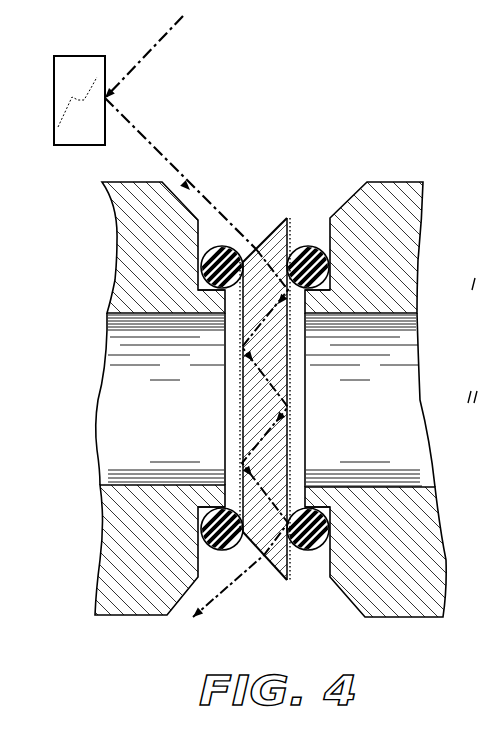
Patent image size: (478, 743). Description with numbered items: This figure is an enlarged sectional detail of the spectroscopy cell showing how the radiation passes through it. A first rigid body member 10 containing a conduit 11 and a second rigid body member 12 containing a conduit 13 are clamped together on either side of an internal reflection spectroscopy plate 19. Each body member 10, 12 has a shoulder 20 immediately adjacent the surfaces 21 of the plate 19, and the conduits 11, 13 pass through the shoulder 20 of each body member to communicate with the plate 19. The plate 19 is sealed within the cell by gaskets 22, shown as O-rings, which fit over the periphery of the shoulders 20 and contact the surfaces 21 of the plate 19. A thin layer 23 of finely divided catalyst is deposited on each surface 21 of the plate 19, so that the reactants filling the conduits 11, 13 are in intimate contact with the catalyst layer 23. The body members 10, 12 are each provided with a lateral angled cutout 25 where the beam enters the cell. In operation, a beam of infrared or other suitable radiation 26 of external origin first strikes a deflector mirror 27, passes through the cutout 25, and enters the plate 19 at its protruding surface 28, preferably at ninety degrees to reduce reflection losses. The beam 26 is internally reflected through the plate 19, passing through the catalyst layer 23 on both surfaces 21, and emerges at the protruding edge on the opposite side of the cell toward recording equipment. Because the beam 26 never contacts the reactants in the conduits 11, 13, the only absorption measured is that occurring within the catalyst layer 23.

The first rigid body member 10 is at (115, 260).
The conduit 11 is at (118, 420).
The second rigid body member 12 is at (422, 265).
The conduit 13 is at (402, 448).
The plate 19 is at (258, 427).
The shoulder 20 is at (217, 296).
The surfaces 21 is at (241, 402).
The gaskets 22 is at (215, 262).
The catalyst layer 23 is at (243, 421).
The lateral angled cutout 25 is at (195, 188).
The radiation beam 26 is at (133, 125).
The deflector mirror 27 is at (80, 130).
The protruding surface 28 is at (262, 242).